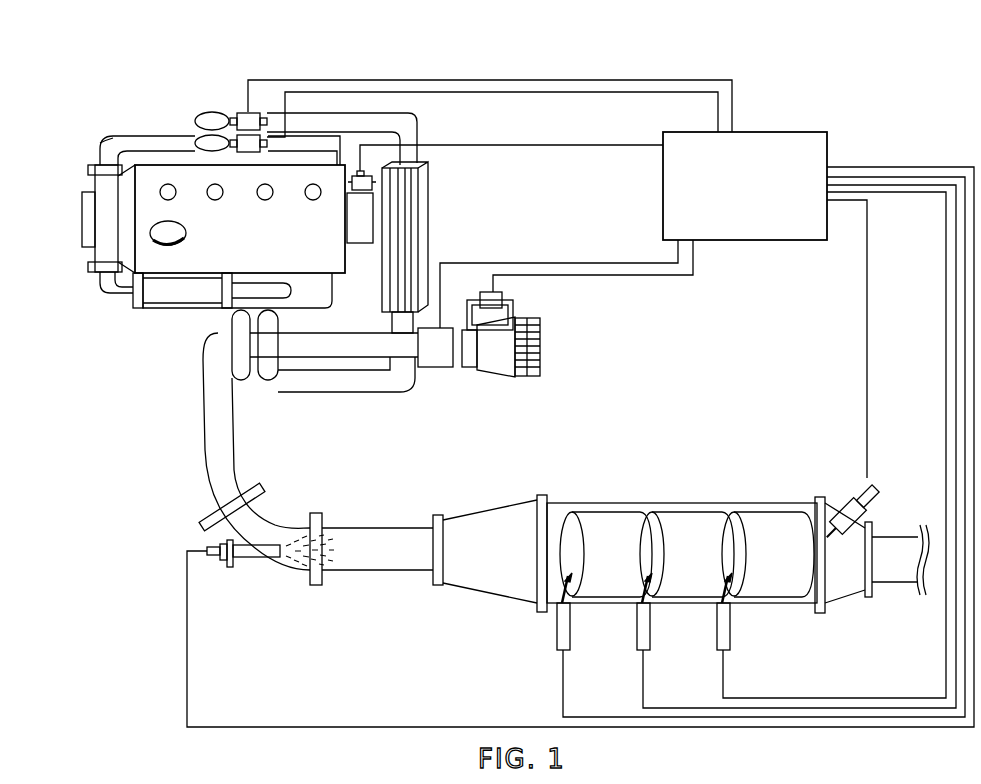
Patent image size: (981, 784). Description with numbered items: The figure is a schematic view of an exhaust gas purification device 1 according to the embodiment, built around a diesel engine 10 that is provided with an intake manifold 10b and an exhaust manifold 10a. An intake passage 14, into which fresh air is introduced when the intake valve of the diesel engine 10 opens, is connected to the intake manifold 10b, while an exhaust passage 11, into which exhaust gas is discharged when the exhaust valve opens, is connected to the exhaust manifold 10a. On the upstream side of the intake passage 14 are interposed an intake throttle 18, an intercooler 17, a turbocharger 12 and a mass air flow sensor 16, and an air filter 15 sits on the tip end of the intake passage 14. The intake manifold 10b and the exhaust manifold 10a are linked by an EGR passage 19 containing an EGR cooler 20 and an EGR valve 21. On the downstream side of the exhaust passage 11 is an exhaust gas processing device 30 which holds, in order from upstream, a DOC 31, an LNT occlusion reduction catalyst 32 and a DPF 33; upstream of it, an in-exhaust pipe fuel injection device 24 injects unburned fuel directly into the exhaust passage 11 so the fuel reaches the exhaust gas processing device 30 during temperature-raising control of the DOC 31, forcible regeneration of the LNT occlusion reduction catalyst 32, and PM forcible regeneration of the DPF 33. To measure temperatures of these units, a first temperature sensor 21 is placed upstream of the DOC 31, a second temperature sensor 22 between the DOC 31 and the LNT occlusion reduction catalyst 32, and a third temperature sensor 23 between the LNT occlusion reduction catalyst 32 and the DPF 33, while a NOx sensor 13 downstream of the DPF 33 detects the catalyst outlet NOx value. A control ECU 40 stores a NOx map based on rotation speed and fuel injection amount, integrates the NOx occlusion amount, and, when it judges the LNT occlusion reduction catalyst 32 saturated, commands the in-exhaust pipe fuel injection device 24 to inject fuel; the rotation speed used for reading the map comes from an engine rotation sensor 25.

The engine system 1 is at (457, 47).
The diesel engine 10 is at (270, 243).
The exhaust manifold 10a is at (182, 308).
The intake manifold 10b is at (150, 132).
The exhaust passage 11 is at (207, 473).
The turbocharger 12 is at (250, 380).
The NOx sensor 13 is at (860, 476).
The intake passage 14 is at (415, 108).
The air filter 15 is at (490, 360).
The mass air flow sensor 16 is at (435, 368).
The intercooler 17 is at (428, 212).
The intake throttle 18 is at (233, 112).
The EGR passage 19 is at (100, 145).
The EGR cooler 20 is at (153, 308).
The EGR valve / first temperature sensor 21 is at (197, 115).
The second temperature sensor 22 is at (647, 625).
The third temperature sensor 23 is at (730, 625).
The in-exhaust pipe fuel injection device 24 is at (238, 562).
The engine rotation sensor 25 is at (377, 172).
The exhaust gas processing device 30 is at (720, 502).
The DOC 31 is at (603, 512).
The LNT occlusion reduction catalyst 32 is at (668, 512).
The DPF 33 is at (763, 512).
The control ECU 40 is at (783, 132).